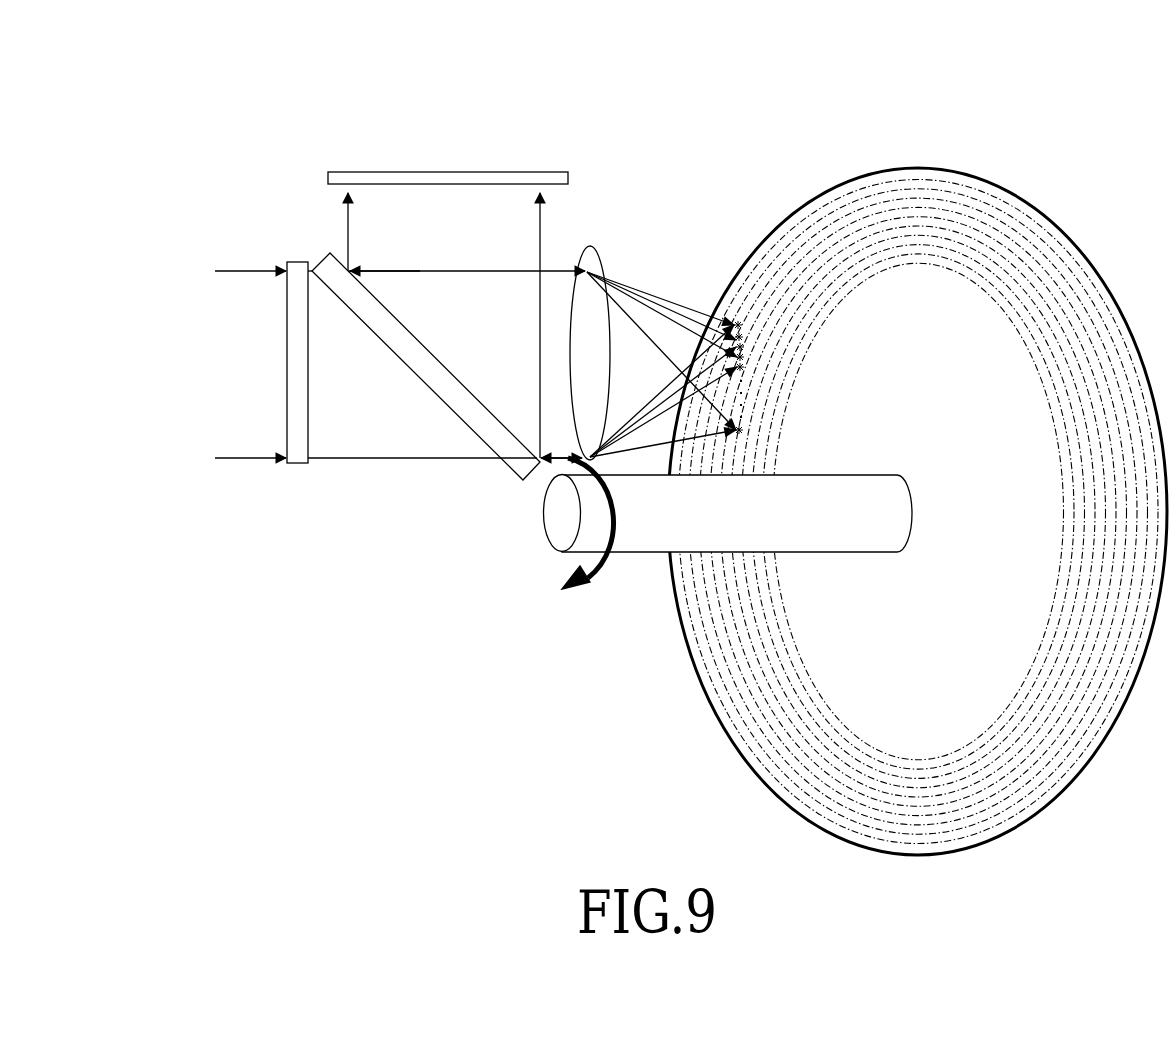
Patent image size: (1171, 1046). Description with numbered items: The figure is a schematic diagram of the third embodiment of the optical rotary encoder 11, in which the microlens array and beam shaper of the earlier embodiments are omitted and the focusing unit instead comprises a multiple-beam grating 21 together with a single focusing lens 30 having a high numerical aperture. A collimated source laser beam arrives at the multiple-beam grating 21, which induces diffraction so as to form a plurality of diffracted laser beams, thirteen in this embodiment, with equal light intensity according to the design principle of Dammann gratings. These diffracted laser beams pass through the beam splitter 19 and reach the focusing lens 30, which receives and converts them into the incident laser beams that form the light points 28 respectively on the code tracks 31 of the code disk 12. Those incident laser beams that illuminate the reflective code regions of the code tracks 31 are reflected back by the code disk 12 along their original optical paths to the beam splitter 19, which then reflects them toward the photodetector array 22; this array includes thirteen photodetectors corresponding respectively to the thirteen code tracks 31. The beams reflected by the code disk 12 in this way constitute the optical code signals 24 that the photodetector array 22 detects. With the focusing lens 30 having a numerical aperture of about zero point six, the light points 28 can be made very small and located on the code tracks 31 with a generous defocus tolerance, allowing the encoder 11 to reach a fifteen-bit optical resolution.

The optical rotary encoder 11 is at (213, 149).
The code disk 12 is at (1036, 212).
The beam splitter 19 is at (380, 345).
The multiple-beam grating 21 is at (297, 465).
The photodetector array 22 is at (568, 174).
The optical code signals 24 is at (546, 219).
The light points 28 is at (764, 314).
The focusing lens 30 is at (596, 250).
The code tracks 31 is at (956, 172).